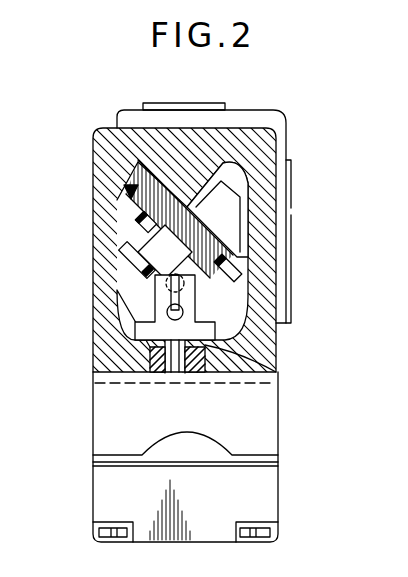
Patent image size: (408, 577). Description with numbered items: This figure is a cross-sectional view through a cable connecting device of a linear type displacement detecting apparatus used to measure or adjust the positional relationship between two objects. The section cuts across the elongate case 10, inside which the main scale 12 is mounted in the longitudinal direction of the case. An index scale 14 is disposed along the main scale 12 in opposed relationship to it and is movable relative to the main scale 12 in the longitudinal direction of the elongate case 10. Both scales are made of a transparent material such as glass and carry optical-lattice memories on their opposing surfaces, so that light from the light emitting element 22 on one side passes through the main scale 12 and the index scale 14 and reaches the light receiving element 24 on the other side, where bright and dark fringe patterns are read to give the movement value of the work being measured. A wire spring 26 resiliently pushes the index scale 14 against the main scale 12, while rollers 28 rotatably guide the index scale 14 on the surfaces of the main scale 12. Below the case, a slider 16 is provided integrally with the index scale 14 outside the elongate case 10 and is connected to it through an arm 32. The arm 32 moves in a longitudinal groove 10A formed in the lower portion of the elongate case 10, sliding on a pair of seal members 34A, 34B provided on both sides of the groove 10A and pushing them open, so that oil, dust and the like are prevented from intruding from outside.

The elongate case 10 is at (262, 344).
The longitudinal groove 10A is at (186, 373).
The main scale 12 is at (130, 200).
The index scale 14 is at (133, 245).
The slider 16 is at (264, 496).
The light emitting element 22 is at (232, 170).
The light receiving element 24 is at (121, 284).
The wire spring 26 is at (178, 302).
The rollers 28 is at (132, 232).
The arm 32 is at (176, 373).
The seal member 34A is at (155, 372).
The seal member 34B is at (276, 374).